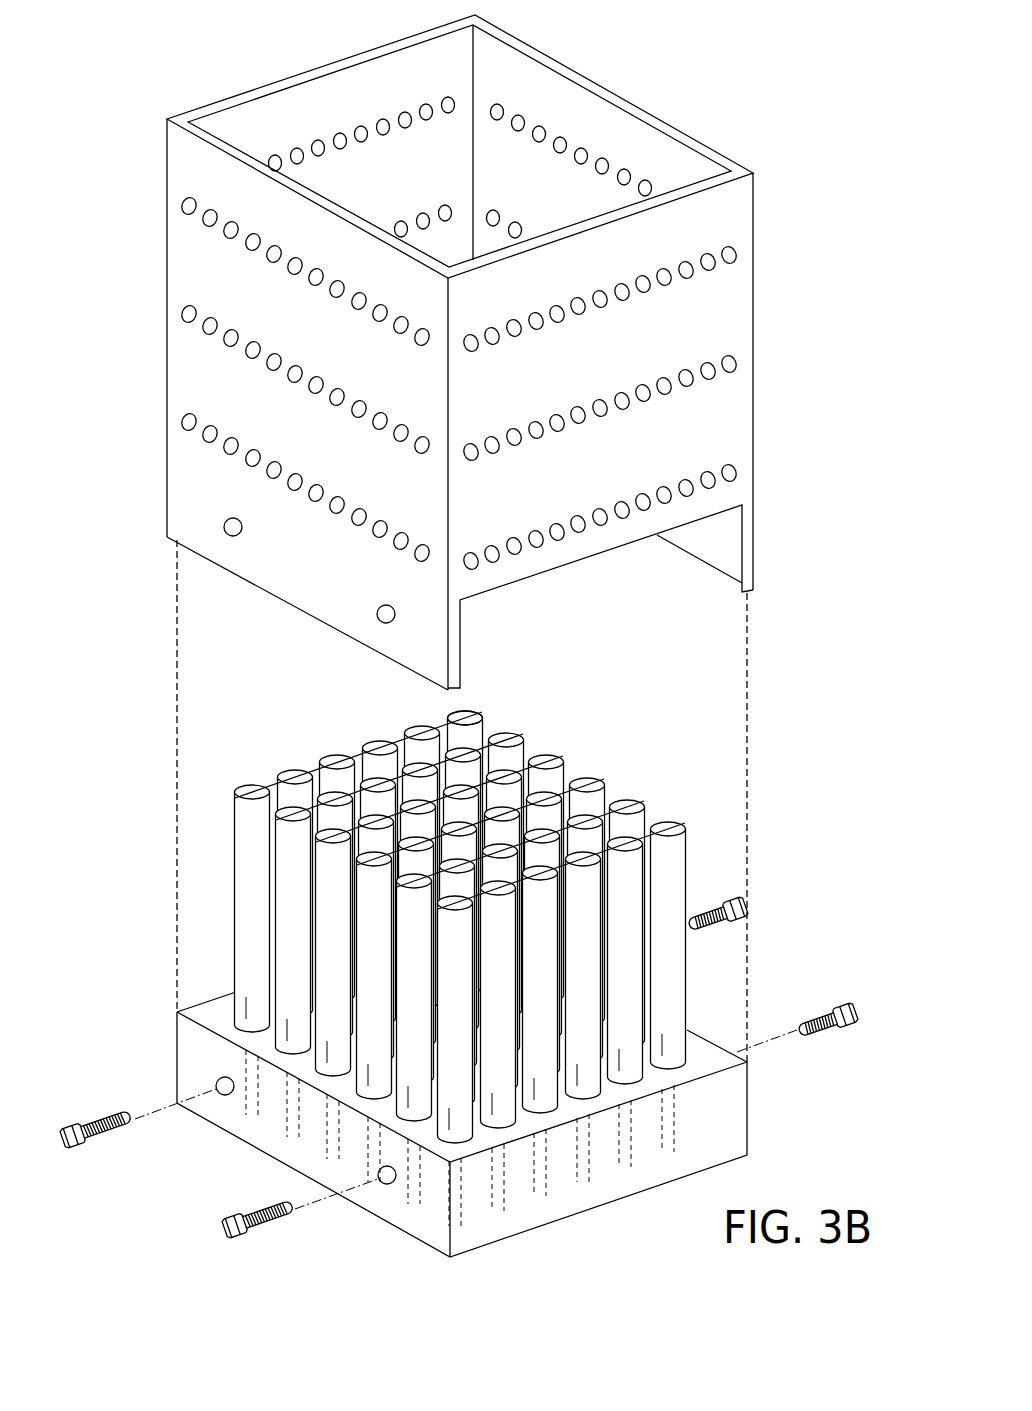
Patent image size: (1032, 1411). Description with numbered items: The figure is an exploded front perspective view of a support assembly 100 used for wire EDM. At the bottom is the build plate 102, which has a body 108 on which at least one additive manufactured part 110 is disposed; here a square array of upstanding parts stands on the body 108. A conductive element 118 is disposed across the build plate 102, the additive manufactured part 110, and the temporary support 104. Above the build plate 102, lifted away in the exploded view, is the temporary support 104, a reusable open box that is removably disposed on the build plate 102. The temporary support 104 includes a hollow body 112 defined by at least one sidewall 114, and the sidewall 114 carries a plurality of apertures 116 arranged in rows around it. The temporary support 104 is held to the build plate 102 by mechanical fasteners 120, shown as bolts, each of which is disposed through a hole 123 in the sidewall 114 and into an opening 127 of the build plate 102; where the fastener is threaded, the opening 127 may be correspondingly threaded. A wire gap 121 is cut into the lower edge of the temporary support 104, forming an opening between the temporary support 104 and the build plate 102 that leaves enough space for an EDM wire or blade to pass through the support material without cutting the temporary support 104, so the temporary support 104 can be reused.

The support assembly 100 is at (824, 639).
The build plate 102 is at (653, 1198).
The temporary support 104 is at (760, 212).
The body 108 is at (750, 1113).
The additive manufactured part 110 is at (232, 892).
The hollow body 112 is at (544, 99).
The sidewall 114 is at (185, 163).
The apertures 116 is at (182, 420).
The conductive element 118 is at (445, 702).
The mechanical fastener 120 is at (95, 1120).
The wire gap 121 is at (729, 547).
The hole 123 is at (225, 526).
The opening 127 is at (382, 1188).